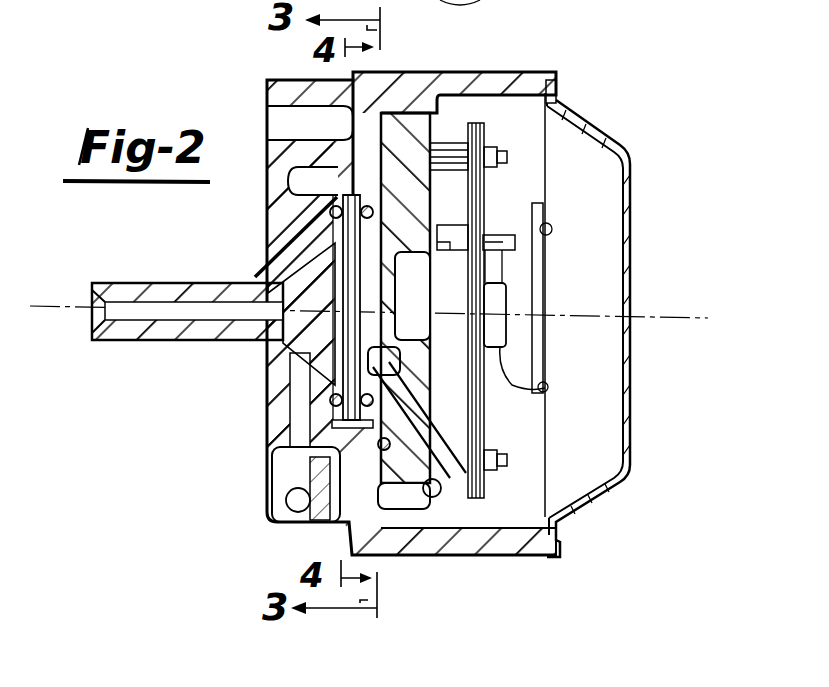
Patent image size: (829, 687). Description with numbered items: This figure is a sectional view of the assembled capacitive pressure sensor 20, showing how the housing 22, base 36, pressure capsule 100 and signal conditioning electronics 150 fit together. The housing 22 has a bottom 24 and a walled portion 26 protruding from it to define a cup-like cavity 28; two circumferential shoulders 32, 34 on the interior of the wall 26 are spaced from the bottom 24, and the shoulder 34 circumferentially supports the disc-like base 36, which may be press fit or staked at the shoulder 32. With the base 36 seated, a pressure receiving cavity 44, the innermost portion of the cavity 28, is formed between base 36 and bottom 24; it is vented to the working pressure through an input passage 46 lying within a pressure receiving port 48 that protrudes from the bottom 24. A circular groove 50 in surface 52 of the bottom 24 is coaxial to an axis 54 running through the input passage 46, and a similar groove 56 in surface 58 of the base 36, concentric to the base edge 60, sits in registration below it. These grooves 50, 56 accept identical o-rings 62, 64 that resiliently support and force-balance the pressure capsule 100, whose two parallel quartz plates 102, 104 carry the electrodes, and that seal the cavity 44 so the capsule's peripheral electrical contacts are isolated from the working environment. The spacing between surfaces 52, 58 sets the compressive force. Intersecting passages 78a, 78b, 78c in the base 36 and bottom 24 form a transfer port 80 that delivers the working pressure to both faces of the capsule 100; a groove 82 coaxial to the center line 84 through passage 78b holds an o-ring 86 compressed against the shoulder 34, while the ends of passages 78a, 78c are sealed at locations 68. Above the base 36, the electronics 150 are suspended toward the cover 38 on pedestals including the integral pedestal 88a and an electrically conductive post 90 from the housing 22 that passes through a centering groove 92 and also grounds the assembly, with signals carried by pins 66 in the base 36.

The capacitive pressure sensor 20 is at (201, 230).
The housing 22 is at (290, 520).
The bottom 24 is at (277, 230).
The walled portion 26 is at (290, 80).
The cup-like cavity 28 is at (320, 180).
The circumferential shoulder 32 is at (433, 555).
The circumferential shoulder 34 is at (390, 113).
The base 36 is at (437, 77).
The cover 38 is at (633, 153).
The pressure receiving cavity 44 is at (263, 357).
The input passage 46 is at (92, 306).
The pressure receiving port 48 is at (160, 330).
The circular groove 50 is at (330, 212).
The surface 52 is at (350, 200).
The axis 54 is at (43, 305).
The groove 56 is at (372, 216).
The surface 58 is at (437, 157).
The edge 60 is at (407, 507).
The o-ring 62 is at (290, 425).
The o-ring 64 is at (357, 400).
The pins 66 is at (542, 212).
The sealing locations 68 is at (262, 500).
The passage 78a is at (290, 393).
The passage 78b is at (267, 537).
The passage 78c is at (397, 397).
The transfer port 80 is at (343, 497).
The groove 82 is at (440, 455).
The center line 84 is at (395, 464).
The o-ring 86 is at (337, 517).
The pedestal 88a is at (510, 153).
The electrically conductive post 90 is at (480, 465).
The centering groove 92 is at (410, 0).
The pressure capsule 100 is at (290, 464).
The quartz plate 102 is at (340, 290).
The quartz plate 104 is at (355, 285).
The signal conditioning electronics 150 is at (548, 393).